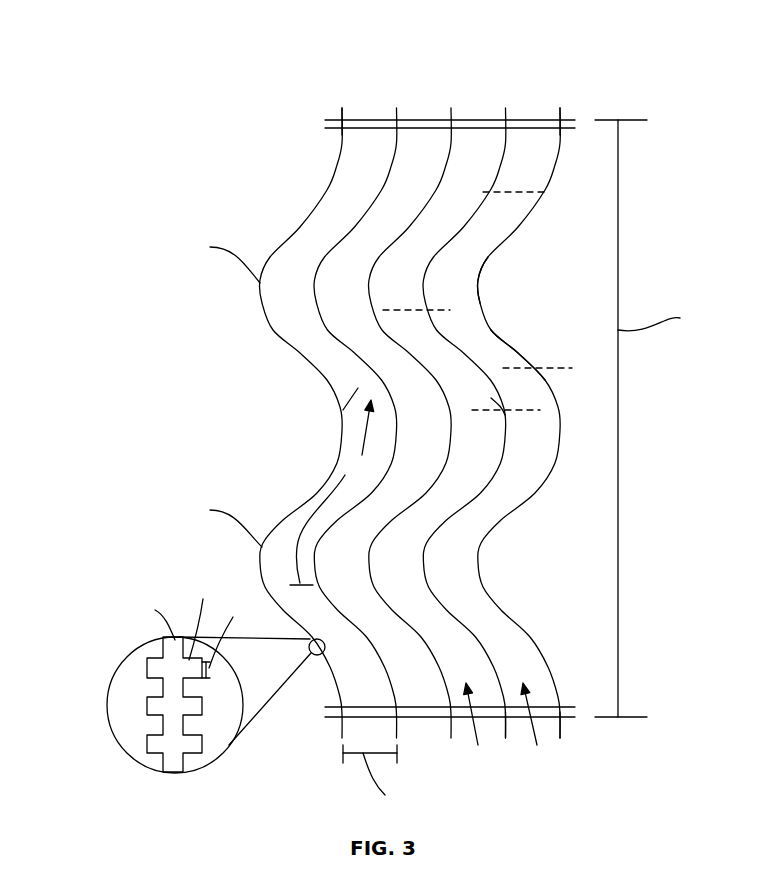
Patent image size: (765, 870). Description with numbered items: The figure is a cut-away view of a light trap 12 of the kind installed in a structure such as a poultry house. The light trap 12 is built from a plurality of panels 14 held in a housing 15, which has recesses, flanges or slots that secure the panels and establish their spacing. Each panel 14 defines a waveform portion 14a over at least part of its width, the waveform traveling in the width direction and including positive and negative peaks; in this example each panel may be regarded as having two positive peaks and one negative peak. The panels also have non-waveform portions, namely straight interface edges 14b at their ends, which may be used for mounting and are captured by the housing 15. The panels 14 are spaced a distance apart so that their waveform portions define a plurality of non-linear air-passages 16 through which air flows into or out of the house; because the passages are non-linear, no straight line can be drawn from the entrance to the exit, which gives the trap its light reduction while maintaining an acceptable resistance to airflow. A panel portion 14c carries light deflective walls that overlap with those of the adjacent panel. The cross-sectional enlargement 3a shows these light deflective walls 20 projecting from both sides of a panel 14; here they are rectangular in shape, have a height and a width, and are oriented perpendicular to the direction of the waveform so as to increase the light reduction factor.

The light trap 12 is at (158, 200).
The panel 14 is at (342, 108).
The waveform portion 14a is at (547, 342).
The interface edge 14b is at (340, 115).
The panel portion 14c is at (482, 275).
The housing 15 is at (375, 118).
The non-linear air-passage 16 is at (420, 586).
The light deflective wall 20 is at (112, 667).
The cross-sectional enlargement 3a is at (106, 614).